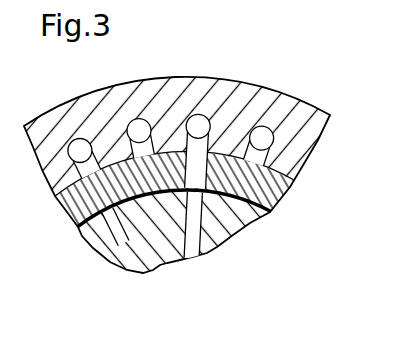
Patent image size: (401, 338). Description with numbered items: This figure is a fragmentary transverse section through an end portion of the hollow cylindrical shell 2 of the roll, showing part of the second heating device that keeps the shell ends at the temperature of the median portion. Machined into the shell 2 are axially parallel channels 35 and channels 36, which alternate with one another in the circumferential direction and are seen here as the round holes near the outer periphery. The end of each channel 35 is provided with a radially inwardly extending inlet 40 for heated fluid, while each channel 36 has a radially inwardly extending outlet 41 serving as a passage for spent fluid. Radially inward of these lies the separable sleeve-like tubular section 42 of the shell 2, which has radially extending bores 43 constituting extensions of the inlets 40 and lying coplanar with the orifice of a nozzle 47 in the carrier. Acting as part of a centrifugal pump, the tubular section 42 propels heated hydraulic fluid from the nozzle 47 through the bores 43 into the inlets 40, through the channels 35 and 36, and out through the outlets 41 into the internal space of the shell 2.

The shell 2 is at (242, 100).
The channels 35 is at (200, 125).
The channels 36 is at (262, 135).
The inlet 40 is at (187, 143).
The outlet 41 is at (266, 162).
The tubular section 42 is at (275, 188).
The bores 43 is at (231, 207).
The nozzle 47 is at (192, 243).